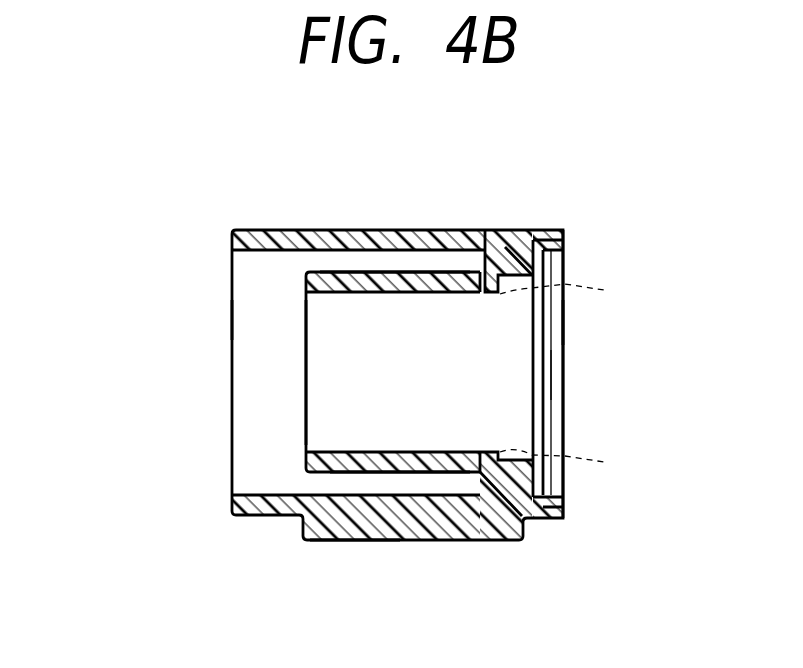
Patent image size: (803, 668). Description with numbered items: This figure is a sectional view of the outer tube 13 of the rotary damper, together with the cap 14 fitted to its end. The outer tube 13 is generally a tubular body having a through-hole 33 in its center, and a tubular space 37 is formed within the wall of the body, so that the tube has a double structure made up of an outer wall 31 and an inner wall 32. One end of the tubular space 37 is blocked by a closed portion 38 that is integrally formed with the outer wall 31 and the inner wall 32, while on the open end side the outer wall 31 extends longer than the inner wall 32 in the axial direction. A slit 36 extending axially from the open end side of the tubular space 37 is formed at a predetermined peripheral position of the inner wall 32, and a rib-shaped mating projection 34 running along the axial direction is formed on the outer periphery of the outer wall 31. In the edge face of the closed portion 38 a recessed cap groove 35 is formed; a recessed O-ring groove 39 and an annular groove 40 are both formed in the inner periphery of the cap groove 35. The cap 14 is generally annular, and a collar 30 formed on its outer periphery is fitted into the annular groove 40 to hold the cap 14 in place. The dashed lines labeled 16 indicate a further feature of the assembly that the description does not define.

The outer tube 13 is at (186, 317).
The cap 14 is at (565, 322).
The annular seal 16 is at (567, 375).
The collar 30 is at (548, 375).
The outer wall 31 is at (360, 231).
The inner wall 32 is at (310, 272).
The through-hole 33 is at (333, 402).
The mating projection 34 is at (327, 541).
The cap groove 35 is at (531, 231).
The slit 36 is at (387, 462).
The tubular space 37 is at (422, 272).
The closed portion 38 is at (512, 231).
The O-ring groove 39 is at (483, 231).
The annular groove 40 is at (562, 232).